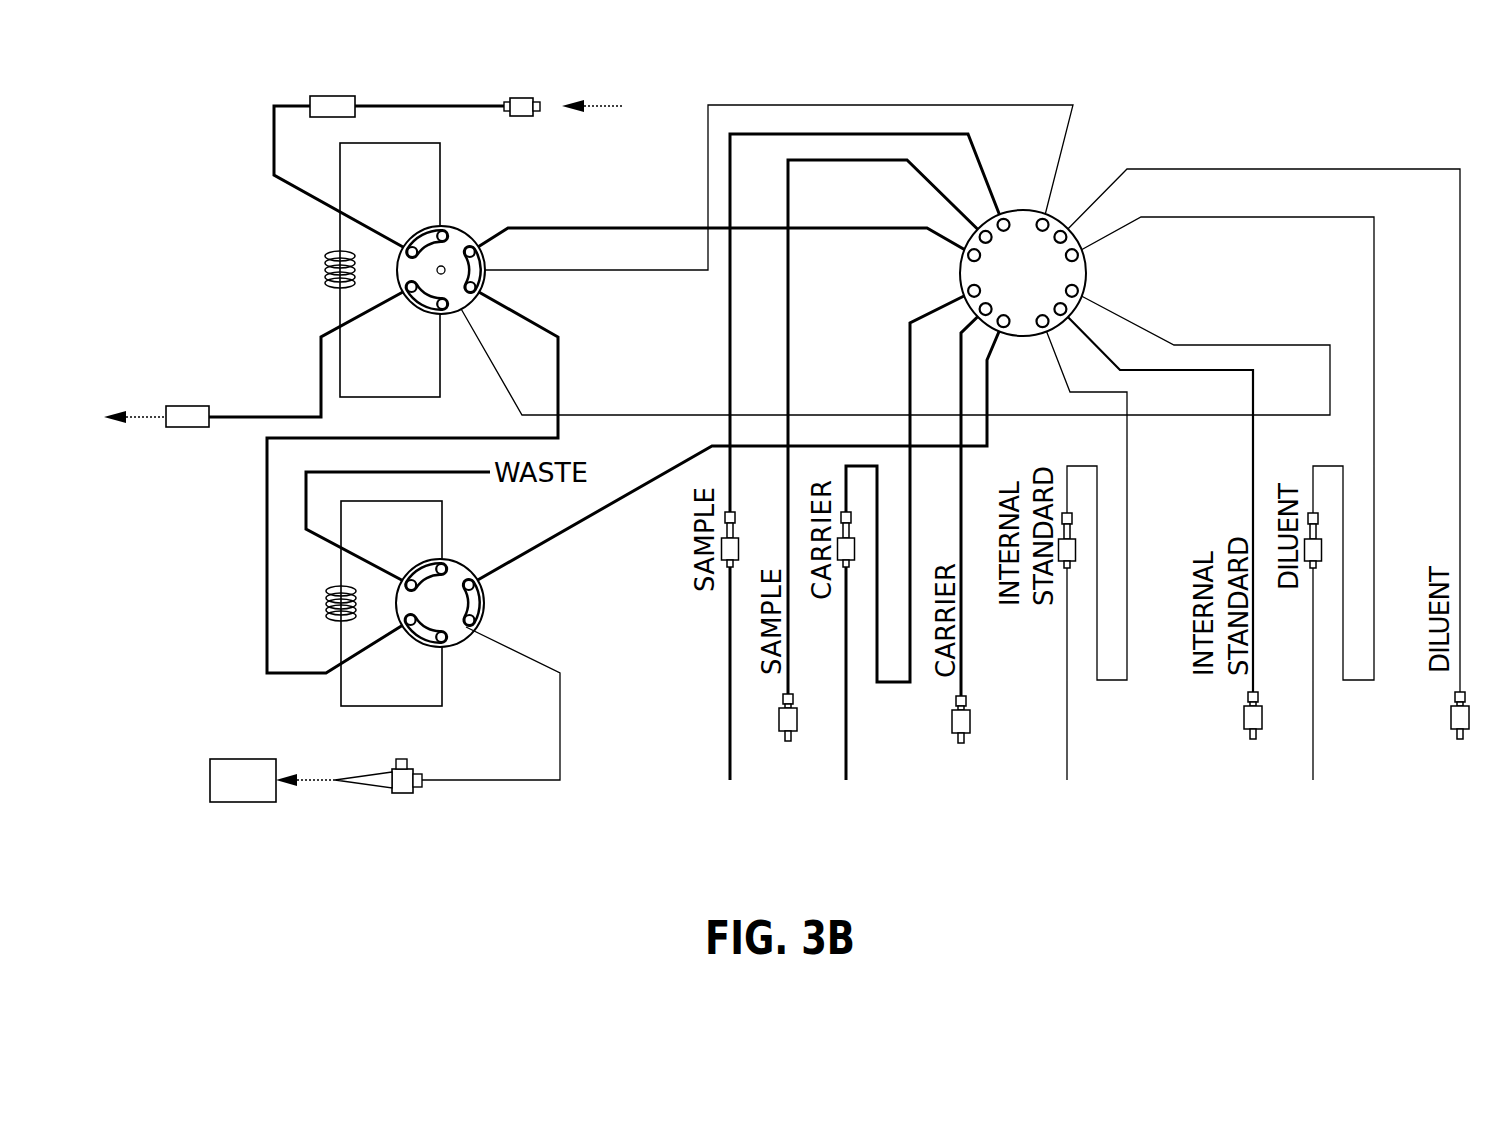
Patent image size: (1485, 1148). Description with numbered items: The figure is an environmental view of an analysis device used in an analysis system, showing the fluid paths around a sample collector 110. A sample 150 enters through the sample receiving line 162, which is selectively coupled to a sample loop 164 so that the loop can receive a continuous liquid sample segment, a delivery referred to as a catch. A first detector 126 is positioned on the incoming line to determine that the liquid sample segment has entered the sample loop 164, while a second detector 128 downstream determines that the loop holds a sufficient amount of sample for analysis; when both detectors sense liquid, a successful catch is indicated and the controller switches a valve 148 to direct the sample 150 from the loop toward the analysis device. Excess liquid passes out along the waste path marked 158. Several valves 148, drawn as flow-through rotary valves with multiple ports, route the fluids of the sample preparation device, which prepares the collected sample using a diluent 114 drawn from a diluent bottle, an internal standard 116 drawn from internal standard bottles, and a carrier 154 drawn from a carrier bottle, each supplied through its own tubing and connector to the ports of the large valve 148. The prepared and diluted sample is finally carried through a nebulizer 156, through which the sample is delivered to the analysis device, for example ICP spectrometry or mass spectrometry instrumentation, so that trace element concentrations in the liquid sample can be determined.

The sample collector 110 is at (184, 120).
The first detector 126 is at (334, 96).
The sample receiving line 162 is at (426, 104).
The sample 150 is at (615, 105).
The valve 148 is at (462, 228).
The sample loop 164 is at (324, 267).
The waste outlet 158 is at (131, 397).
The second detector 128 is at (185, 406).
The nebulizer 156 is at (320, 796).
The carrier 154 is at (730, 822).
The internal standard 116 is at (846, 822).
The diluent 114 is at (1313, 822).